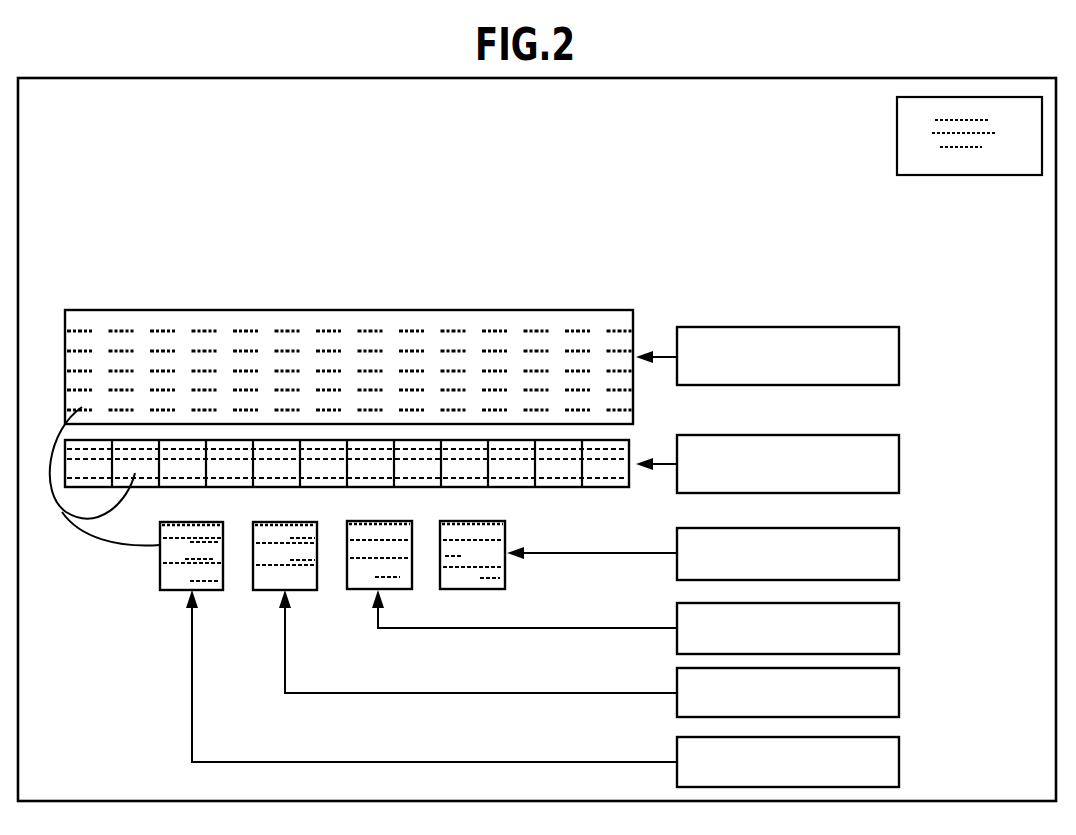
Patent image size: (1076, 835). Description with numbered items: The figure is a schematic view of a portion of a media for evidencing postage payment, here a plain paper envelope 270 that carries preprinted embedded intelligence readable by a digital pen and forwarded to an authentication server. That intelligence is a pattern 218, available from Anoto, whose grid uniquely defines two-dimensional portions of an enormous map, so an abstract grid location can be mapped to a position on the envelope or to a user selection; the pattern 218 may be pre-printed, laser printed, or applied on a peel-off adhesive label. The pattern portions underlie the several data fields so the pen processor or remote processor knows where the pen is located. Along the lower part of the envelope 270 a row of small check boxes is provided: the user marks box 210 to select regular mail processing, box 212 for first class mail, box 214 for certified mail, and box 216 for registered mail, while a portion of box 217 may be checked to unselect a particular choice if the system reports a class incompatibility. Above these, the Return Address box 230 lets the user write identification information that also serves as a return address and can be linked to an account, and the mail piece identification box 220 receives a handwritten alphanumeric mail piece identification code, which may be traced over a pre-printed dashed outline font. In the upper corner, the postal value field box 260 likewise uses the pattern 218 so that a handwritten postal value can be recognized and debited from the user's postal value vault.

The box 210 is at (325, 762).
The box 212 is at (402, 693).
The box 214 is at (495, 628).
The box 216 is at (575, 553).
The box 217 is at (492, 584).
The pattern 218 is at (63, 513).
The mail piece identification box 220 is at (660, 463).
The Return Address box 230 is at (662, 355).
The postal value field box 260 is at (986, 176).
The envelope 270 is at (263, 78).